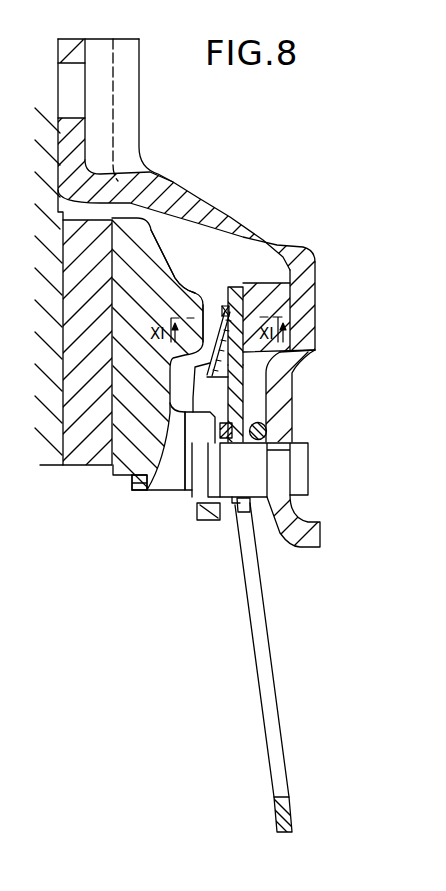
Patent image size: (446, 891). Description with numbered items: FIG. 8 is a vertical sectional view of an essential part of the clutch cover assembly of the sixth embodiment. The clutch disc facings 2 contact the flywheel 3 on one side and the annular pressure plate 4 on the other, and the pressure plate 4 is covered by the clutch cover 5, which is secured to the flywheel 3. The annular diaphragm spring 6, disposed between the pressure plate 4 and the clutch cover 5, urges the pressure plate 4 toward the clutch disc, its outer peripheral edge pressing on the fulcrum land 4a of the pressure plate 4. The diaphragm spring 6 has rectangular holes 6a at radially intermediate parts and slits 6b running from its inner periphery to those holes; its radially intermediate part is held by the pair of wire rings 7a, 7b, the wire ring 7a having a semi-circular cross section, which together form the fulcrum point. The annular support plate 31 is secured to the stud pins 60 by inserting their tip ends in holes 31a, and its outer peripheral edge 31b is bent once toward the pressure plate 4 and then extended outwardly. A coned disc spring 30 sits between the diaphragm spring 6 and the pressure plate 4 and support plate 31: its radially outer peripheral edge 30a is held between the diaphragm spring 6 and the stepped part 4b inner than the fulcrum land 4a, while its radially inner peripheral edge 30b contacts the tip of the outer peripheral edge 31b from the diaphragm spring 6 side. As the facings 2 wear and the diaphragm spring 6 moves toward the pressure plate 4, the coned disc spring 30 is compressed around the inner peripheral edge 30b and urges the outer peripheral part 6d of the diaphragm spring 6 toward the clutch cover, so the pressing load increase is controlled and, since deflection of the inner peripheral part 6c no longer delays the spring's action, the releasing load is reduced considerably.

The facings 2 is at (72, 338).
The flywheel 3 is at (33, 275).
The pressure plate 4 is at (122, 375).
The fulcrum land 4a is at (216, 293).
The stepped part 4b is at (185, 277).
The clutch cover 5 is at (178, 180).
The diaphragm spring 6 is at (286, 666).
The rectangular holes 6a is at (233, 507).
The slits 6b is at (253, 632).
The inner peripheral part 6c is at (283, 765).
The outer peripheral part 6d is at (316, 265).
The wire ring 7a is at (232, 405).
The wire ring 7b is at (267, 432).
The coned disc spring 30 is at (296, 358).
The radially outer peripheral edge 30a is at (240, 310).
The radially inner peripheral edge 30b is at (240, 381).
The support plate 31 is at (207, 523).
The holes 31a is at (200, 482).
The outer peripheral edge 31b is at (135, 487).
The stud pins 60 is at (250, 462).